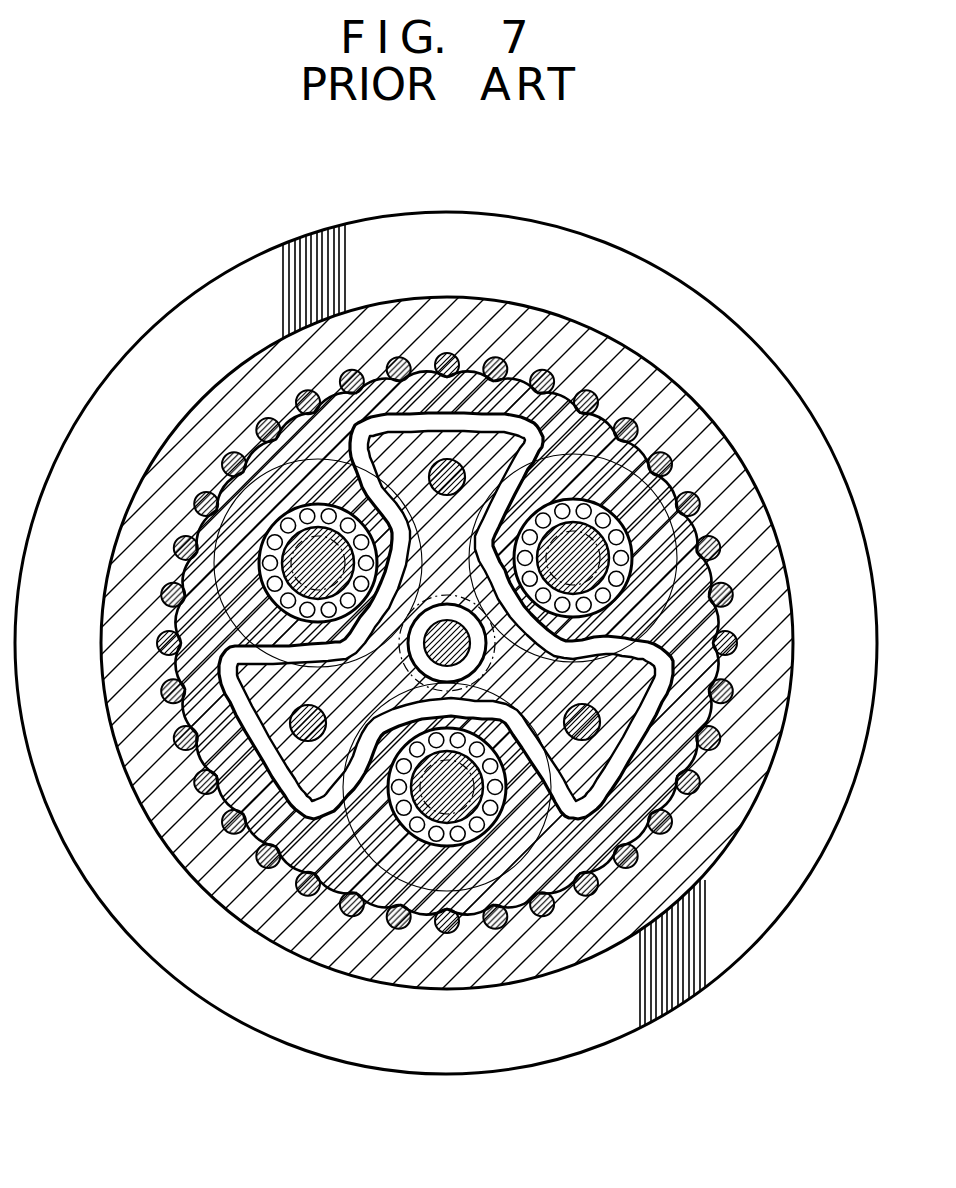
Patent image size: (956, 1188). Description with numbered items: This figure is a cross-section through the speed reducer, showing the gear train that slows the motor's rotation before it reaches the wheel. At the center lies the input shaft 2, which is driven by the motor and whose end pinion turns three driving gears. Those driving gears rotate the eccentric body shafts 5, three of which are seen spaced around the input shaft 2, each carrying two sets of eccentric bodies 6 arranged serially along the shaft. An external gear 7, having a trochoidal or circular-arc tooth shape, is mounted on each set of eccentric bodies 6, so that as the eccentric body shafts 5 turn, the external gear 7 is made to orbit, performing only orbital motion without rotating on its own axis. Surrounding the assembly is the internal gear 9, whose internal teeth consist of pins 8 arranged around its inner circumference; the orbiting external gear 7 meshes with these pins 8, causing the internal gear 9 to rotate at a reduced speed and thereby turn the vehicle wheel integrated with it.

The input shaft 2 is at (487, 653).
The eccentric body shaft 5 is at (613, 542).
The eccentric body 6 is at (660, 480).
The external gear 7 is at (520, 365).
The pin 8 is at (621, 418).
The internal gear 9 is at (570, 324).